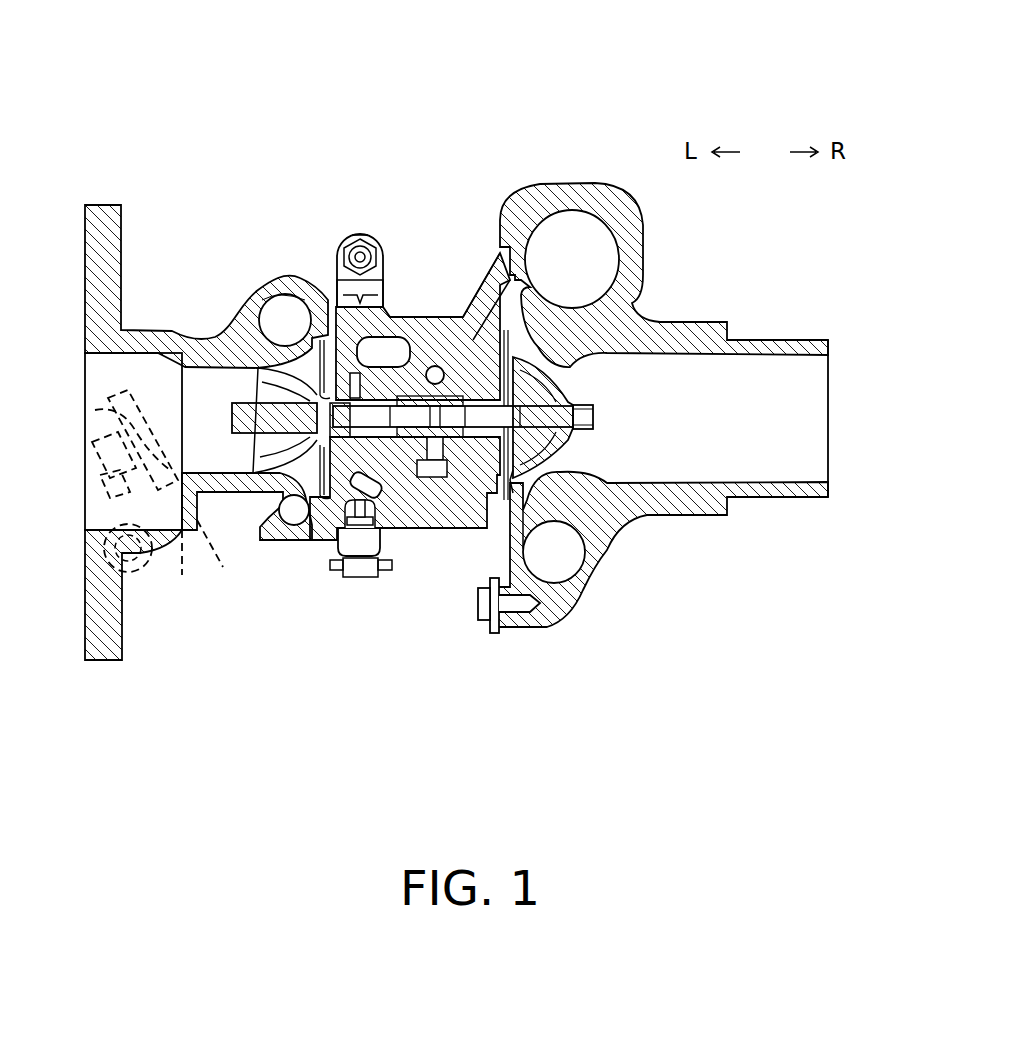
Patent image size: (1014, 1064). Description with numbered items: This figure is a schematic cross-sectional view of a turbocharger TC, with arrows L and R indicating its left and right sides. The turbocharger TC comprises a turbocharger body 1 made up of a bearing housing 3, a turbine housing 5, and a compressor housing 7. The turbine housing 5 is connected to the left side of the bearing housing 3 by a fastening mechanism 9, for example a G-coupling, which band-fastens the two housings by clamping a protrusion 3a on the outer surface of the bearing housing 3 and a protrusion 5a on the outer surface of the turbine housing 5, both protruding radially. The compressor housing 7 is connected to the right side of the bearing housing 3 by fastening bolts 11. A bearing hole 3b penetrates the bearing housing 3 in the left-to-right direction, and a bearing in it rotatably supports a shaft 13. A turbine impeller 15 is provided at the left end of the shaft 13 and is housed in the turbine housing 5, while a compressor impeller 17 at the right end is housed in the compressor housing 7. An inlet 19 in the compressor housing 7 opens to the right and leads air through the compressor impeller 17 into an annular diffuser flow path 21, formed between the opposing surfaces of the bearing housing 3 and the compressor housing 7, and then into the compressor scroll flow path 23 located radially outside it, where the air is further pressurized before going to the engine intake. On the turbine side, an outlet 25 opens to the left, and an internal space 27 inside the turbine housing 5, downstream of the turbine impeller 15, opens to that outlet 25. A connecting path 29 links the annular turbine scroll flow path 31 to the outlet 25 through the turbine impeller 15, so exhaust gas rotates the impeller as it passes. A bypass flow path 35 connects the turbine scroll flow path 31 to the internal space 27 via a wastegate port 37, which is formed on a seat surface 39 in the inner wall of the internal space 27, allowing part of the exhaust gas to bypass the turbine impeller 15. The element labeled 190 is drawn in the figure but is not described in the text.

The turbocharger body 1 is at (272, 128).
The turbocharger TC is at (216, 71).
The bearing housing 3 is at (425, 325).
The protrusion 3a is at (378, 293).
The bearing hole 3b is at (395, 440).
The turbine housing 5 is at (148, 330).
The protrusion 5a is at (340, 292).
The compressor housing 7 is at (585, 183).
The fastening mechanism 9 is at (364, 219).
The fastening bolts 11 is at (483, 630).
The shaft 13 is at (440, 440).
The turbine impeller 15 is at (253, 383).
The compressor impeller 17 is at (567, 447).
The inlet 19 is at (829, 455).
The diffuser flow path 21 is at (478, 292).
The compressor scroll flow path 23 is at (578, 538).
The outlet 25 is at (85, 415).
The internal space 27 is at (148, 382).
The connecting path 29 is at (259, 315).
The turbine scroll flow path 31 is at (300, 338).
The bypass flow path 35 is at (143, 405).
The wastegate port 37 is at (90, 470).
The seat surface 39 is at (135, 418).
The valve 190 is at (110, 516).